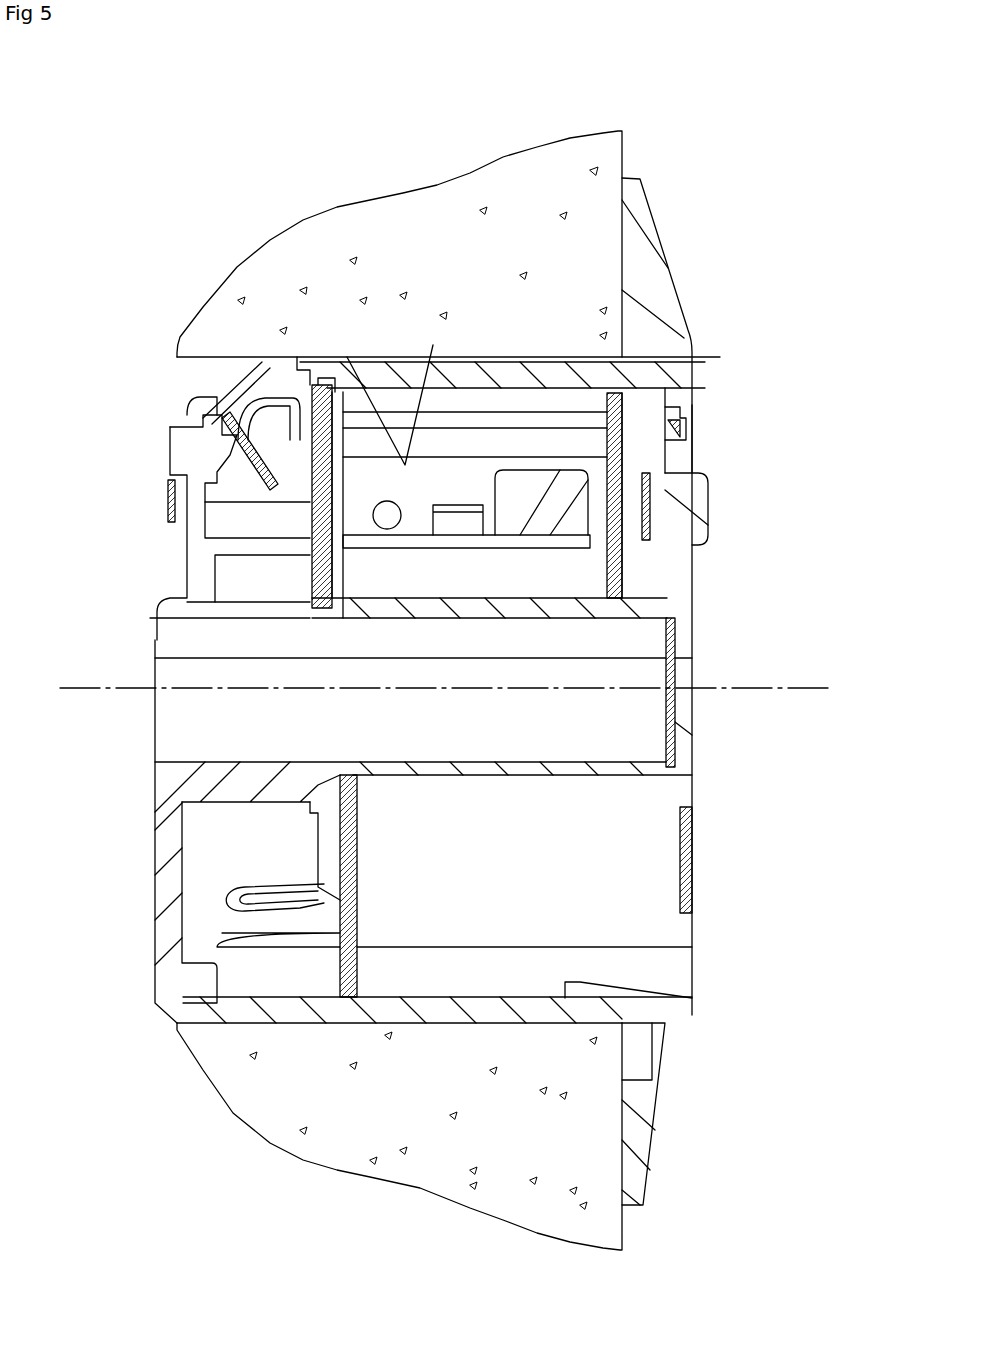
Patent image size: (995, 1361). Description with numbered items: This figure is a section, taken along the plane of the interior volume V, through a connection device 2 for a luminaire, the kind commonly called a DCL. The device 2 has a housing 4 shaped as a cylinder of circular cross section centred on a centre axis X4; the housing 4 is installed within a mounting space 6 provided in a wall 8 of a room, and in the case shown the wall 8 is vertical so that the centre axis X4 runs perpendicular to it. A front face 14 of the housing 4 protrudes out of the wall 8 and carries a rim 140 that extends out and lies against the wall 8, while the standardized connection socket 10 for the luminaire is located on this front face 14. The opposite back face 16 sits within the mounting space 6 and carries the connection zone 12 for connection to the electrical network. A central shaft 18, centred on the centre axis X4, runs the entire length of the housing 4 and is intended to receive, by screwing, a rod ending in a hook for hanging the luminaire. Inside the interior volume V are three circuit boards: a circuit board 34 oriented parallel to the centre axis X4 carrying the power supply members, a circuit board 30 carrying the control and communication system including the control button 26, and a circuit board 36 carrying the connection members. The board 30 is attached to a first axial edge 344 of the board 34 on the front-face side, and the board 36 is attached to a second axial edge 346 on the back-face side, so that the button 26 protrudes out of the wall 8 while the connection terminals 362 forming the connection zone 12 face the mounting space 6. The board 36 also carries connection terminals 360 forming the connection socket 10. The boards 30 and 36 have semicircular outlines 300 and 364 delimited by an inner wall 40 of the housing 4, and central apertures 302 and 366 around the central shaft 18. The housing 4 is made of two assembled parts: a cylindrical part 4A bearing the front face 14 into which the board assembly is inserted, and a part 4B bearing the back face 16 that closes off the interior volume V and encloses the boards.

The connection device 2 is at (780, 560).
The housing 4 is at (62, 1060).
The housing part 4A is at (383, 1013).
The housing part 4B is at (172, 1007).
The mounting space 6 is at (193, 363).
The wall 8 is at (590, 165).
The connection socket 10 is at (565, 840).
The connection zone 12 is at (158, 478).
The front face 14 is at (668, 1058).
The back face 16 is at (152, 853).
The central shaft 18 is at (350, 722).
The control button 26 is at (700, 480).
The circuit board 30 is at (640, 420).
The circuit board 34 is at (545, 512).
The circuit board 36 is at (310, 573).
The inner wall 40 is at (436, 368).
The rim 140 is at (648, 1128).
The semicircular outline 300 is at (532, 397).
The central aperture 302 is at (620, 608).
The first axial edge 344 is at (630, 545).
The second axial edge 346 is at (328, 537).
The connection terminals 360 is at (223, 898).
The connection terminals 362 is at (187, 396).
The semicircular outline 364 is at (329, 382).
The central aperture 366 is at (334, 614).
The interior volume V is at (457, 358).
The centre axis X4 is at (460, 692).